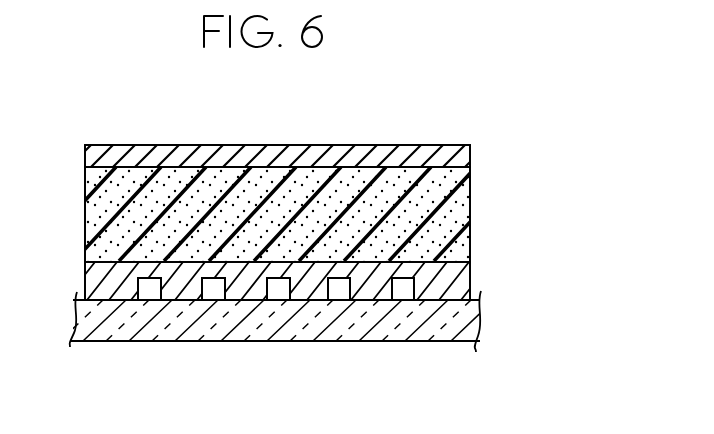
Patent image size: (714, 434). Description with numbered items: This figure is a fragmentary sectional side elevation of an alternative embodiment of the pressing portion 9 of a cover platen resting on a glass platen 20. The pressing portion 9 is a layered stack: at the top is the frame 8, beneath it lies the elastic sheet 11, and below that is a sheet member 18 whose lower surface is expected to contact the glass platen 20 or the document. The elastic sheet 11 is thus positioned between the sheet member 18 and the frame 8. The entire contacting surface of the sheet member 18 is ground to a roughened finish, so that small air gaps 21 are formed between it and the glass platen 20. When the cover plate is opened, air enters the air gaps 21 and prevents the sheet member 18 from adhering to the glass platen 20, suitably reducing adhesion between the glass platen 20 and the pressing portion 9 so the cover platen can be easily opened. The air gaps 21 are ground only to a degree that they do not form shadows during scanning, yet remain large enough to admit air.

The frame 8 is at (386, 145).
The pressing portion 9 is at (512, 232).
The elastic sheet 11 is at (470, 197).
The sheet member 18 is at (468, 277).
The glass platen 20 is at (420, 331).
The air gaps 21 is at (278, 293).